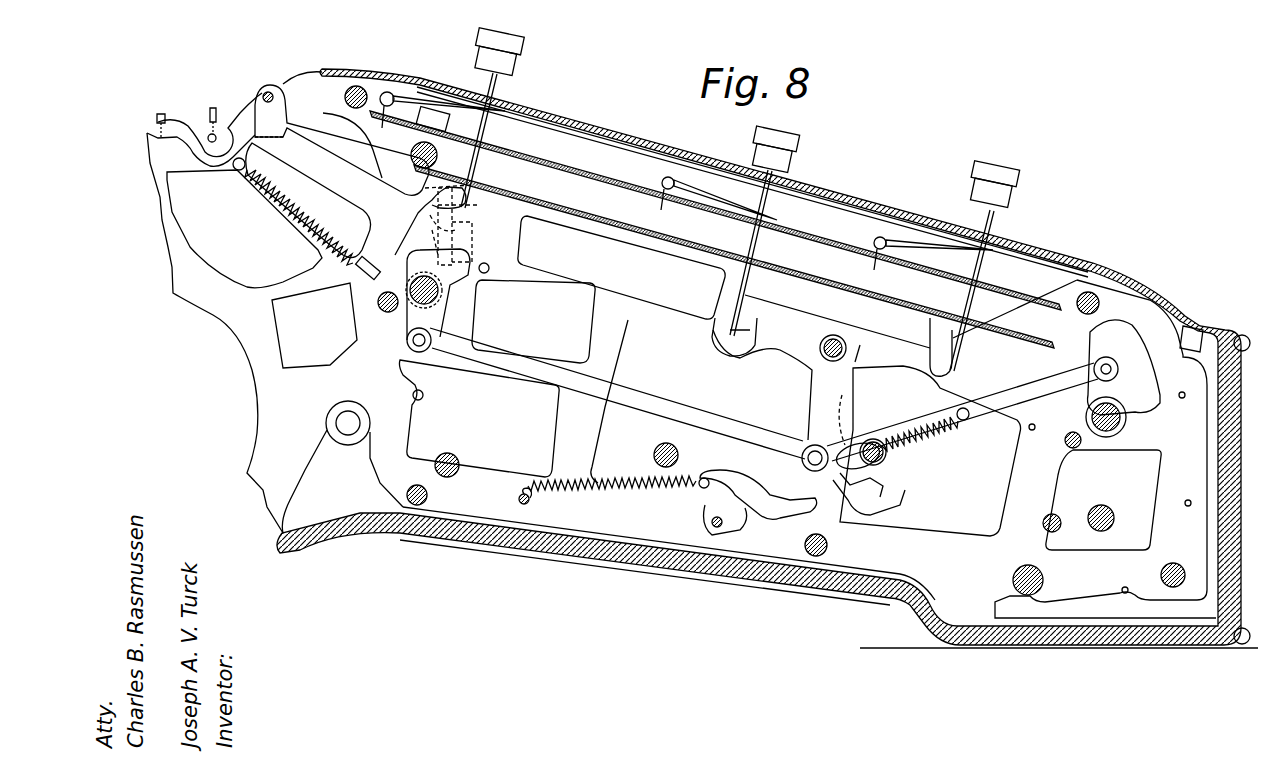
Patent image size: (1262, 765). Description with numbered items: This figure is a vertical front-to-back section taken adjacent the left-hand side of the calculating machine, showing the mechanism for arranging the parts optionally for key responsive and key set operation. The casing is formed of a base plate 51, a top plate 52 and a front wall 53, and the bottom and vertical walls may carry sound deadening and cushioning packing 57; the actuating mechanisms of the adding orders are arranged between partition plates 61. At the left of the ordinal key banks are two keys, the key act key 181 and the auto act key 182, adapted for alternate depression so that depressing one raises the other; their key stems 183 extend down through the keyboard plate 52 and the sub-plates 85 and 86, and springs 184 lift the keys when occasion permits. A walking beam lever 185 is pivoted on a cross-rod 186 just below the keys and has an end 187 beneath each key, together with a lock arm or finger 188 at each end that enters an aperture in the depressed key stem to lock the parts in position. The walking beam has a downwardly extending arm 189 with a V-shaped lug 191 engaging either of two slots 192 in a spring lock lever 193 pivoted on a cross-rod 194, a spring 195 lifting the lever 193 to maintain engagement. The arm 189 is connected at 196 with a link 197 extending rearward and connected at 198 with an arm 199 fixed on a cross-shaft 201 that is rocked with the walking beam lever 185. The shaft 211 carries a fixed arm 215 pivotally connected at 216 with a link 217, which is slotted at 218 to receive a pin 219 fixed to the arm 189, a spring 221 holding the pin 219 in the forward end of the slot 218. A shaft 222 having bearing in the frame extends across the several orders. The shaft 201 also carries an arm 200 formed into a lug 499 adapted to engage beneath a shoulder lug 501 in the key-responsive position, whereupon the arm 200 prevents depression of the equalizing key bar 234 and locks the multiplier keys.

The base plate 51 is at (590, 572).
The top plate 52 is at (833, 200).
The front wall 53 is at (1222, 448).
The sound deadening and cushioning packing 57 is at (447, 550).
The partition plate 61 is at (215, 300).
The sub-plate 85 is at (547, 160).
The sub-plate 86 is at (475, 195).
The key act key 181 is at (772, 143).
The auto act key 182 is at (990, 183).
The key stem 183 is at (763, 200).
The spring 184 is at (700, 177).
The walking beam lever 185 is at (793, 337).
The cross-rod 186 is at (833, 345).
The end of walking beam lever 187 is at (727, 340).
The lock arm or finger 188 is at (743, 300).
The downwardly extending arm 189 is at (842, 408).
The V-shaped lug 191 is at (873, 475).
The slot 192 is at (863, 503).
The spring lock lever 193 is at (773, 520).
The cross-rod 194 is at (717, 527).
The spring 195 is at (630, 463).
The connection 196 is at (808, 462).
The link 197 is at (733, 393).
The connection 198 is at (427, 338).
The arm 199 is at (438, 310).
The arm 200 is at (448, 245).
The cross-shaft 201 is at (430, 285).
The shaft 211 is at (1110, 427).
The fixed arm 215 is at (1110, 397).
The pivotal connection 216 is at (1110, 363).
The link 217 is at (1033, 390).
The slot 218 is at (857, 457).
The pin 219 is at (890, 455).
The spring 221 is at (953, 437).
The shaft 222 is at (447, 460).
The equalizing key bar 234 is at (477, 193).
The lug 499 is at (448, 225).
The shoulder lug 501 is at (465, 208).